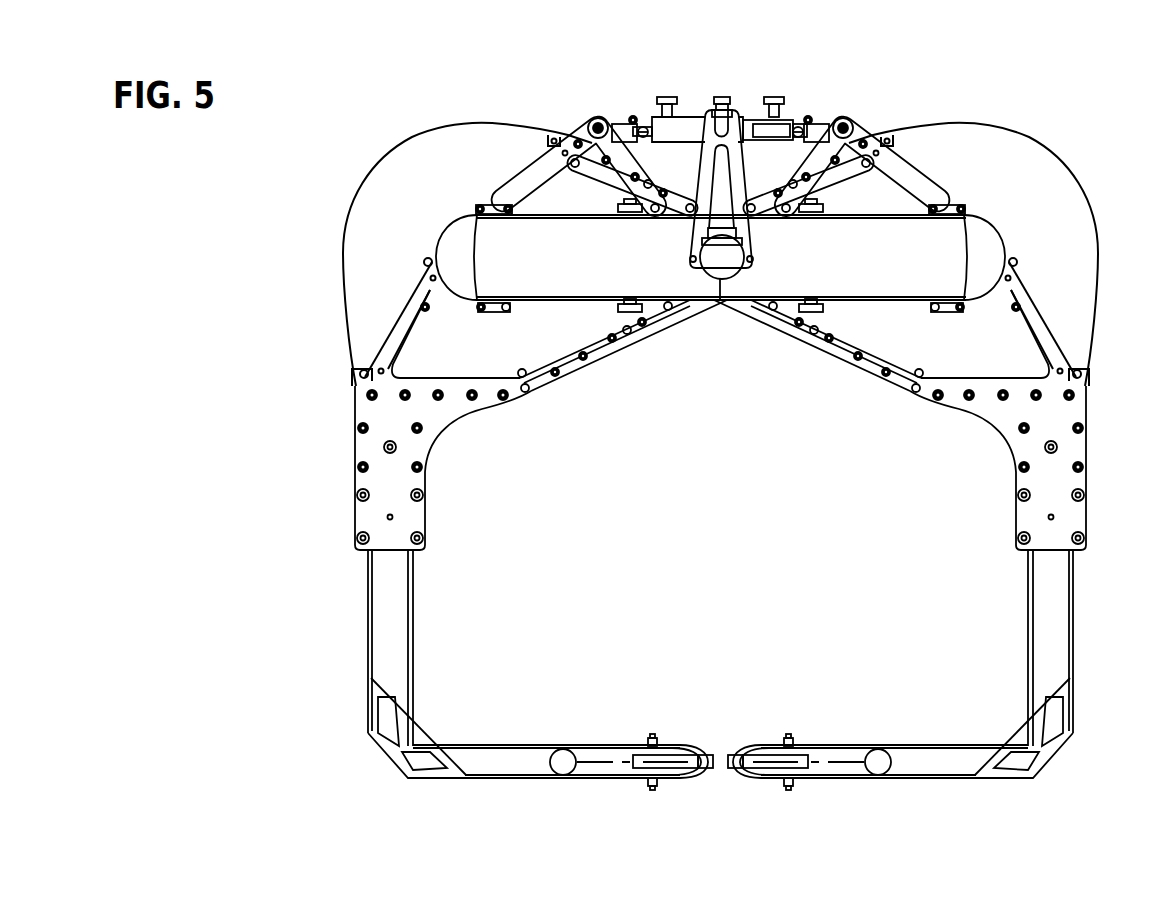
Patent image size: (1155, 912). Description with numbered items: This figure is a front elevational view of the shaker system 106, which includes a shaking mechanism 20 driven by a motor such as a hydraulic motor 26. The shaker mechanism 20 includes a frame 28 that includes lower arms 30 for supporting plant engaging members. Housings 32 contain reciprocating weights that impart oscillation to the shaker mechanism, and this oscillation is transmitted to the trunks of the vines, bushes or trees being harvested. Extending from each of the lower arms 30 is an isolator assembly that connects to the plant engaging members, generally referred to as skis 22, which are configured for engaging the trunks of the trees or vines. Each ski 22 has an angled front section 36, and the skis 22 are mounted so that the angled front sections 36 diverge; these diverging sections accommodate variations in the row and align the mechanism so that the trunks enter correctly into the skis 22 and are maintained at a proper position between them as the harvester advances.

The shaking mechanism 20 is at (1008, 85).
The skis 22 is at (702, 742).
The hydraulic motor 26 is at (720, 198).
The frame 28 is at (403, 622).
The lower arms 30 is at (507, 758).
The housings 32 is at (446, 158).
The angled front section 36 is at (602, 772).
The shaker system 106 is at (942, 801).